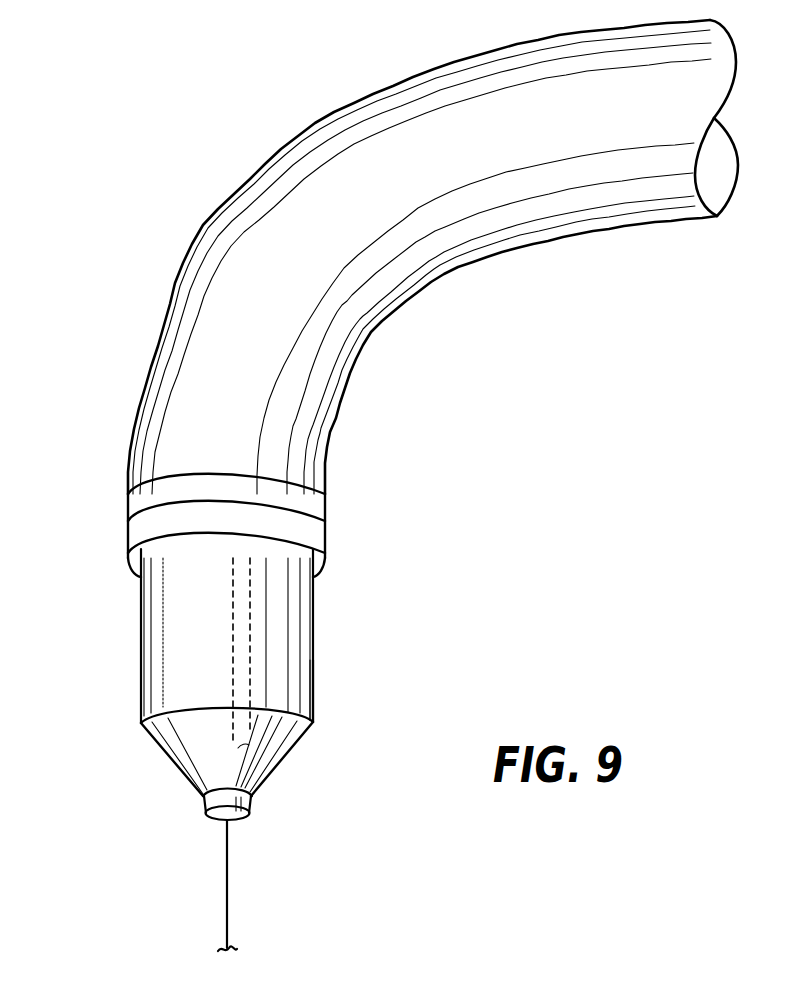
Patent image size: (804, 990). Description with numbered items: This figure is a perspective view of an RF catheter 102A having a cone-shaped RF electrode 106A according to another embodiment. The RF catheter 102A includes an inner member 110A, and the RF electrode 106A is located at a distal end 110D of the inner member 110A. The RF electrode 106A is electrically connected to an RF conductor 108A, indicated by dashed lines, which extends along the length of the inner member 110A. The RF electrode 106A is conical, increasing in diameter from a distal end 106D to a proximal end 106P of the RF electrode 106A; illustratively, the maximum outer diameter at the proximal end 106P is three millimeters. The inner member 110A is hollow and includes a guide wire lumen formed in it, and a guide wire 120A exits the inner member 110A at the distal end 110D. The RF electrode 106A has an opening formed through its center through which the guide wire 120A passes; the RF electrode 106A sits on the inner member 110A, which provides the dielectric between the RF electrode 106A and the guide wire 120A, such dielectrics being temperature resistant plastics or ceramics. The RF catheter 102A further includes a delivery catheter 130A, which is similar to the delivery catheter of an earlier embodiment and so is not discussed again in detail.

The delivery catheter 130A is at (540, 158).
The RF catheter 102A is at (214, 712).
The inner member 110A is at (302, 612).
The RF conductor 108A is at (243, 660).
The distal end of inner member 110D is at (294, 694).
The proximal end of RF electrode 106P is at (140, 727).
The RF electrode 106A is at (283, 750).
The distal end of RF electrode 106D is at (203, 794).
The guide wire 120A is at (228, 890).